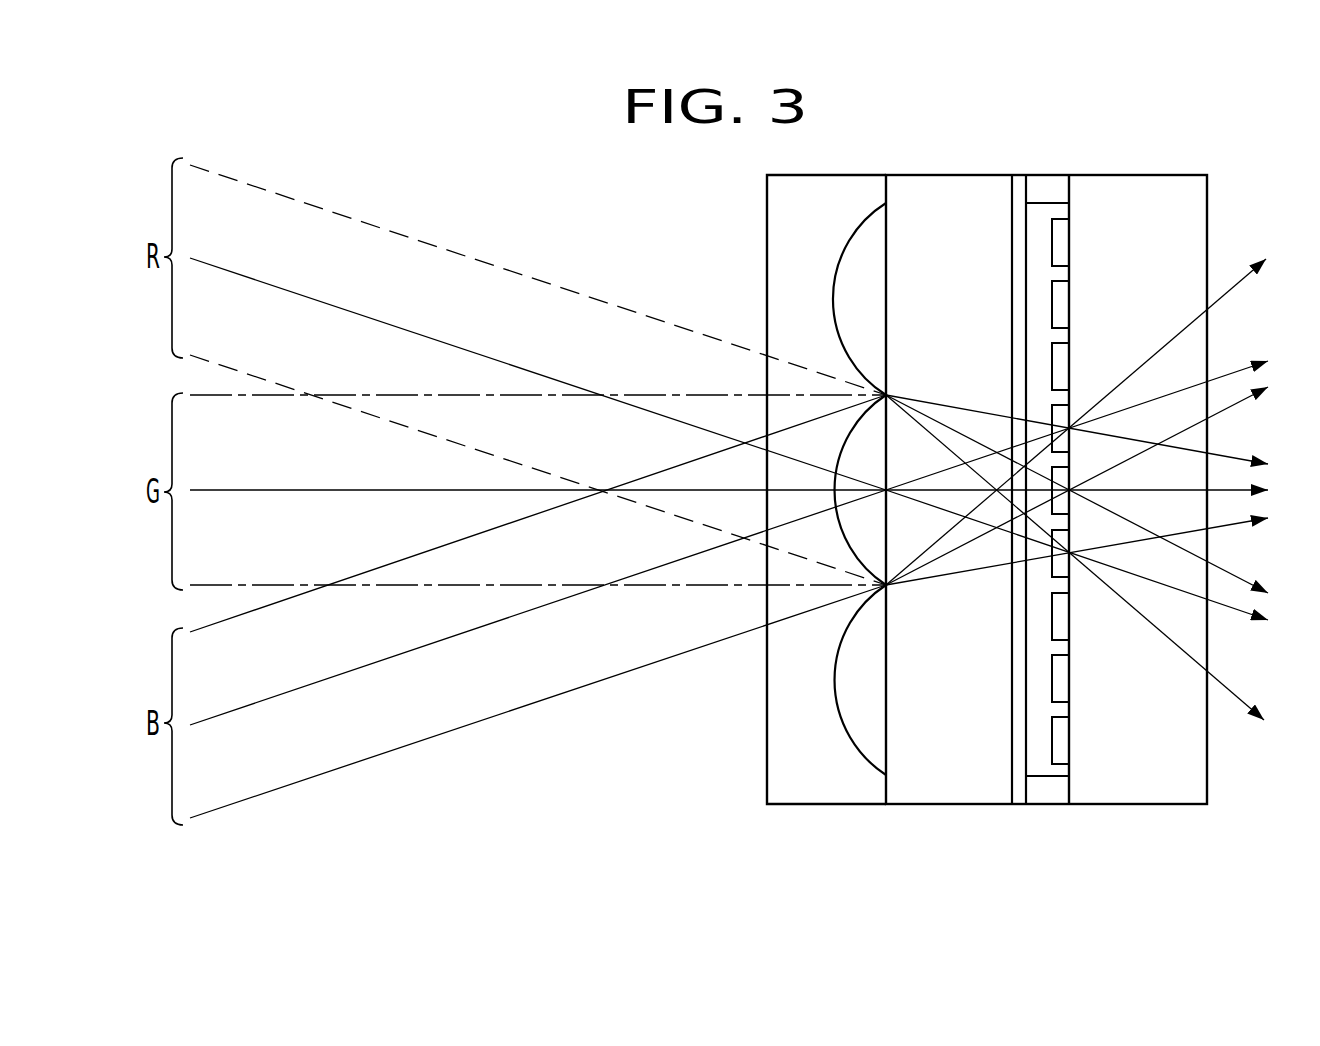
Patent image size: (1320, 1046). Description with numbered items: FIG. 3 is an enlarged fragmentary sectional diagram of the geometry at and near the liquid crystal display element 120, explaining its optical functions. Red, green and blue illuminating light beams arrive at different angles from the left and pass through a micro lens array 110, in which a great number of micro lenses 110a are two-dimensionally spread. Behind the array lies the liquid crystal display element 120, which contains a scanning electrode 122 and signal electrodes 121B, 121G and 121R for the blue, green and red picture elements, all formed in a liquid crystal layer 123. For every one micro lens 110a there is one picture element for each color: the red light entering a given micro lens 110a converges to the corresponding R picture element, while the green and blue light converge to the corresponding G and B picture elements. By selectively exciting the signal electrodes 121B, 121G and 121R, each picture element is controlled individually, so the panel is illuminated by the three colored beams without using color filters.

The micro lens array 110 is at (791, 528).
The micro lens 110a is at (853, 283).
The liquid crystal display element 120 is at (1046, 496).
The signal electrode for blue picture element 121B is at (1069, 228).
The signal electrode for green picture element 121G is at (1069, 288).
The signal electrode for red picture element 121R is at (1069, 352).
The scanning electrode 122 is at (1019, 182).
The liquid crystal layer 123 is at (1042, 218).